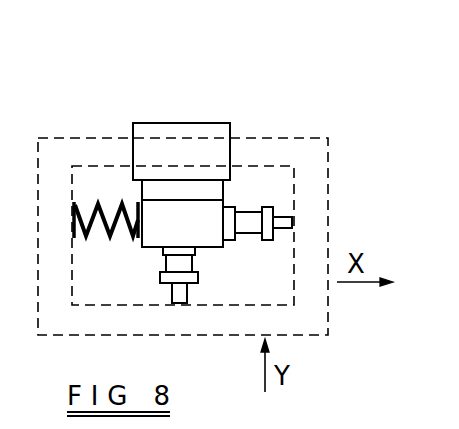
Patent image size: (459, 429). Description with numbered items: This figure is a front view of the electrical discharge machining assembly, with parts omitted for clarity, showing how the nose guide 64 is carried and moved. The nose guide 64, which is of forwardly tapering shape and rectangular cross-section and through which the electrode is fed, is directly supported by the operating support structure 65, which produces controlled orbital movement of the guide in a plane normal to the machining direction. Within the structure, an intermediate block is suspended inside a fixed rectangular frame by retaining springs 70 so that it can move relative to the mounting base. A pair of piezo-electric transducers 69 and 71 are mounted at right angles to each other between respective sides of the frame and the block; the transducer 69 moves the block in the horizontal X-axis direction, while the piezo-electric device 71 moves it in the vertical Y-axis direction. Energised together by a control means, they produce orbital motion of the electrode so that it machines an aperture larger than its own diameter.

The nose guide 64 is at (183, 135).
The operating support structure 65 is at (140, 251).
The piezo-electric transducer 69 is at (292, 222).
The retaining springs 70 is at (100, 203).
The piezo-electric device 71 is at (178, 303).